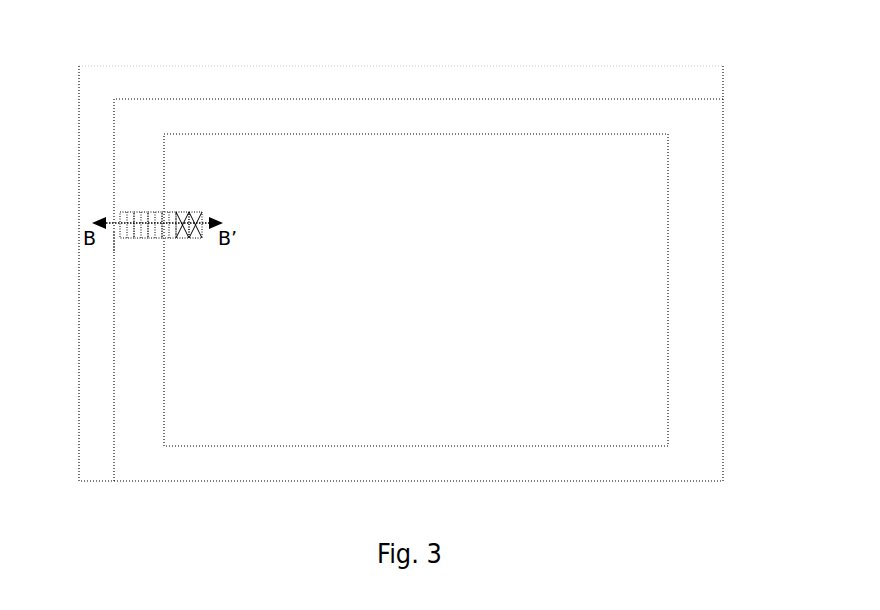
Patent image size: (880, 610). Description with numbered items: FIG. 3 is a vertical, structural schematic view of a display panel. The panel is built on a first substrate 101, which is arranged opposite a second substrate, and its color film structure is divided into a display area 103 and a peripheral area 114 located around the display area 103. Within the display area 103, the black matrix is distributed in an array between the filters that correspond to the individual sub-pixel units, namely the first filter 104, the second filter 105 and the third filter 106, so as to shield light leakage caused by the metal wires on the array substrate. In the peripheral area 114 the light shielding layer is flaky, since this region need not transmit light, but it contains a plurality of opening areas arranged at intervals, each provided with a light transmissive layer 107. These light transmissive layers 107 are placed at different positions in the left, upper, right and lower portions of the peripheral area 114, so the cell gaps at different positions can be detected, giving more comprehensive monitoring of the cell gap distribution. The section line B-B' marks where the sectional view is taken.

The first substrate 101 is at (700, 90).
The display area 103 is at (617, 303).
The first filter 104 is at (158, 214).
The second filter 105 is at (172, 214).
The third filter 106 is at (188, 214).
The light transmissive layer 107 is at (112, 242).
The peripheral area 114 is at (700, 197).